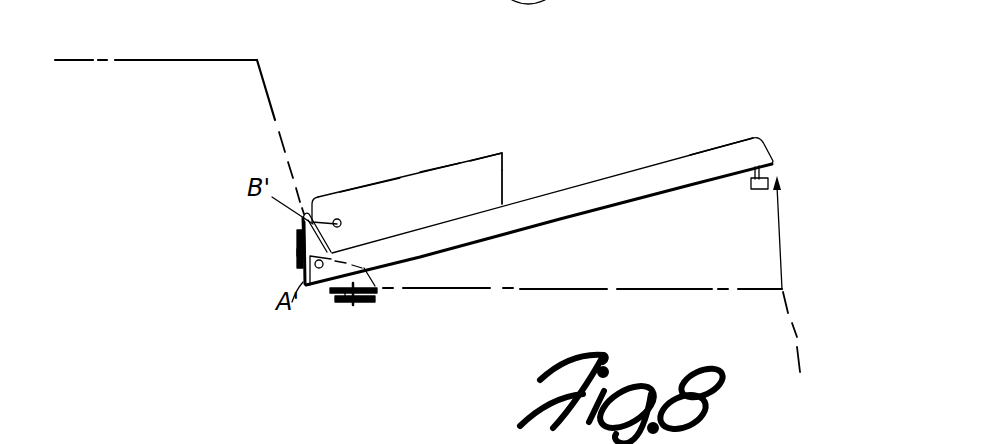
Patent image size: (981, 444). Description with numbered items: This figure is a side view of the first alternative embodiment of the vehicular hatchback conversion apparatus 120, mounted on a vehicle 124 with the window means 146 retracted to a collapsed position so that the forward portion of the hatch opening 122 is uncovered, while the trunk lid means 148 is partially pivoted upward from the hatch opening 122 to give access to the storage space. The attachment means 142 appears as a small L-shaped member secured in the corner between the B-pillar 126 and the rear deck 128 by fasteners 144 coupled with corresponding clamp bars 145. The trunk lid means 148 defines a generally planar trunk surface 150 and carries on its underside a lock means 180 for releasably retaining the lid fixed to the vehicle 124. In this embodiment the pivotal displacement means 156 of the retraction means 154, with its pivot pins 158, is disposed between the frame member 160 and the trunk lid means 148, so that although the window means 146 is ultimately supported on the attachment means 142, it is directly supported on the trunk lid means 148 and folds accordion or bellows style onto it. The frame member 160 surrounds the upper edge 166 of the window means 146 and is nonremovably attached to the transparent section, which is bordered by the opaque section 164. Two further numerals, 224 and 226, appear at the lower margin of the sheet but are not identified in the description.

The first alternative embodiment of the apparatus 120 is at (468, 104).
The hatch opening 122 is at (267, 62).
The vehicle 124 is at (167, 56).
The B-pillar 126 is at (244, 103).
The rear deck 128 is at (623, 288).
The attachment means 142 is at (306, 274).
The fasteners 144 is at (290, 240).
The clamp bars 145 is at (297, 251).
The window means 146 is at (514, 172).
The trunk lid means 148 is at (708, 148).
The trunk surface 150 is at (627, 178).
The retraction means 154 is at (438, 168).
The pivotal displacement means 156 is at (337, 210).
The pivot pins 158 is at (341, 223).
The frame member 160 is at (483, 157).
The opaque section 164 is at (370, 192).
The upper edge 166 is at (503, 155).
The lock means 180 is at (750, 189).
The lower member 224 is at (129, 433).
The lower member 226 is at (279, 437).